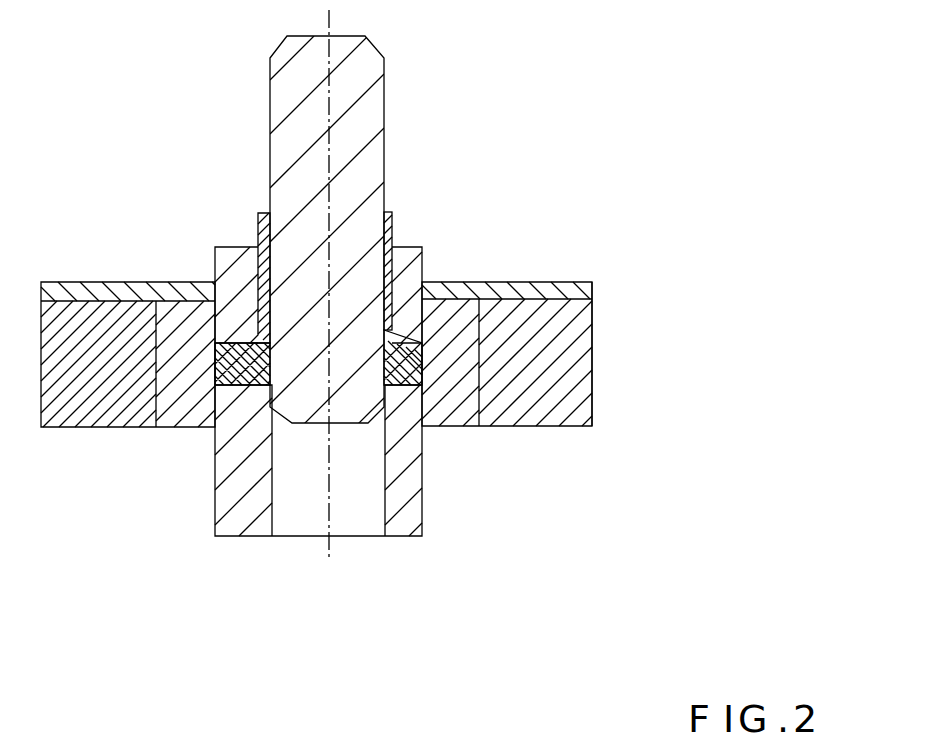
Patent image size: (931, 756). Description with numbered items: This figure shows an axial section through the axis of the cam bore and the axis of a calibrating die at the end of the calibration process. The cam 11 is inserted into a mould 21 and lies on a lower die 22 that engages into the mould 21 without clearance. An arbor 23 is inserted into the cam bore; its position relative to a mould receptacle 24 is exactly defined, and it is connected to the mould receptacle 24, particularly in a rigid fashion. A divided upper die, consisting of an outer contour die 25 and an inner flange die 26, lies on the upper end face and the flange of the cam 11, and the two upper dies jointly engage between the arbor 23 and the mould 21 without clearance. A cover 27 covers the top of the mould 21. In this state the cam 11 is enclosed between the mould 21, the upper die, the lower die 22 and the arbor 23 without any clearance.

The cam 11 is at (412, 329).
The mould 21 is at (484, 352).
The lower die 22 is at (424, 506).
The arbor 23 is at (266, 133).
The mould receptacle 24 is at (598, 376).
The outer contour die 25 is at (251, 242).
The inner flange die 26 is at (398, 222).
The cover 27 is at (577, 276).